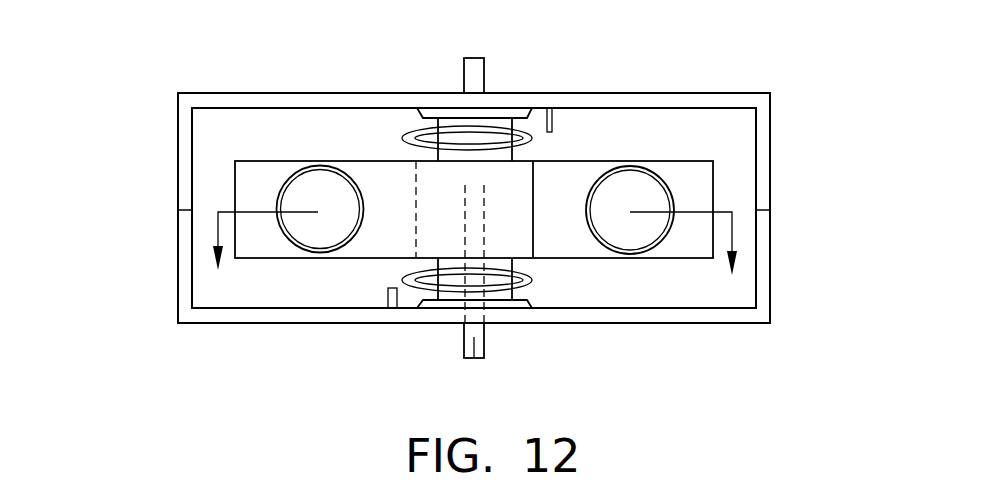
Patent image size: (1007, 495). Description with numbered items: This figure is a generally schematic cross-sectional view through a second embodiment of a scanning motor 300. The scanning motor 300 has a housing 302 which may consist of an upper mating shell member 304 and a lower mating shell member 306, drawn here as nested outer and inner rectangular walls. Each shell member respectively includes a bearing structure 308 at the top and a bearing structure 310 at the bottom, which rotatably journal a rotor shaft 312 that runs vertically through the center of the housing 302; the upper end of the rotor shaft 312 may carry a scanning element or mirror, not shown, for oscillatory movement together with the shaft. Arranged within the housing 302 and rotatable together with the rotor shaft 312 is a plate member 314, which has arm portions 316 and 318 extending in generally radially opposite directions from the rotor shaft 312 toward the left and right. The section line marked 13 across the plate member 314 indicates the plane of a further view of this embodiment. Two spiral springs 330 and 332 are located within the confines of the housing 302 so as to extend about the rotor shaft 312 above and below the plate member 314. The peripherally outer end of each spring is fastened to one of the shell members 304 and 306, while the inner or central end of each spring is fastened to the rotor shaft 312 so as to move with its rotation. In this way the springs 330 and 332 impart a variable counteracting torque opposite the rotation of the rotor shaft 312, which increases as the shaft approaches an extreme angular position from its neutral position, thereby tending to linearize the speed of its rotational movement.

The scanning motor 300 is at (539, 165).
The housing 302 is at (160, 238).
The upper mating shell member 304 is at (771, 168).
The lower mating shell member 306 is at (771, 263).
The bearing structure 308 is at (422, 112).
The bearing structure 310 is at (422, 298).
The rotor shaft 312 is at (485, 75).
The plate member 314 is at (288, 258).
The arm portion 316 is at (235, 193).
The arm portion 318 is at (713, 192).
The spiral spring 330 is at (413, 137).
The spiral spring 332 is at (537, 286).
The section line 13- 13 is at (477, 258).